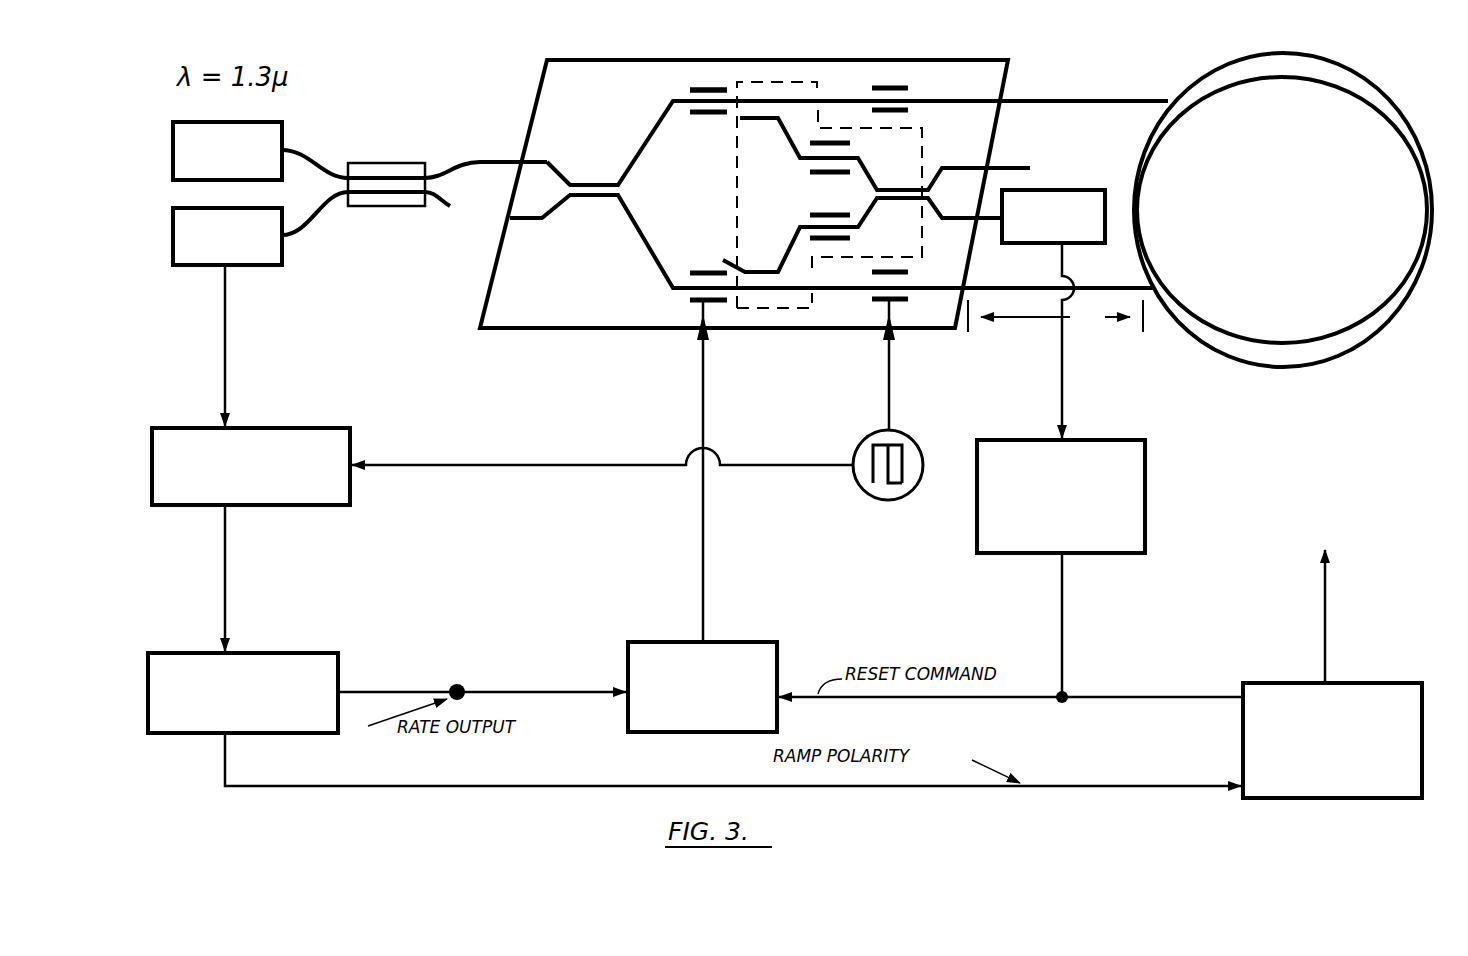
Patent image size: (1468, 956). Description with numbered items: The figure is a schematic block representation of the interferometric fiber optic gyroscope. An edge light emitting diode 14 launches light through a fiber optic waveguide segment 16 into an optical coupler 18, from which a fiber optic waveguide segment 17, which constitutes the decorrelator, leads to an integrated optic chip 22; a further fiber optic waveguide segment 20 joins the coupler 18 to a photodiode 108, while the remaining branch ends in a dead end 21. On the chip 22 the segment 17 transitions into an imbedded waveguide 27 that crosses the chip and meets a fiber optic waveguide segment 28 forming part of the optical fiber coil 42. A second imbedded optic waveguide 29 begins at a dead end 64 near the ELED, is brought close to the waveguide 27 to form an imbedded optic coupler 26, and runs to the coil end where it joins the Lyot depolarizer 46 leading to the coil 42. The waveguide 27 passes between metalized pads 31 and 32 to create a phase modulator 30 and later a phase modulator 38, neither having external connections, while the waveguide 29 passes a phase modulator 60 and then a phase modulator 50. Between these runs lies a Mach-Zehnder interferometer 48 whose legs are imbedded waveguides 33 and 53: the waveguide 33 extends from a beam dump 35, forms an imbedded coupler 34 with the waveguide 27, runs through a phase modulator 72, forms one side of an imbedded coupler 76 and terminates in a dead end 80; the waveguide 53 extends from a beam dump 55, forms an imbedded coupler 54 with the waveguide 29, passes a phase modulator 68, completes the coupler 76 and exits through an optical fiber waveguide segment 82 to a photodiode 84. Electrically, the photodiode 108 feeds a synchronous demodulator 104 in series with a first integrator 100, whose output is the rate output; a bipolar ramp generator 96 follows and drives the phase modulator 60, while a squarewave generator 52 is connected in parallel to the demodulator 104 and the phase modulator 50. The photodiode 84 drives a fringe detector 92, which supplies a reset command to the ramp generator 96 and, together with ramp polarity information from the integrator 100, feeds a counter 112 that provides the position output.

The edge light emitting diode 14 is at (285, 122).
The fiber optic waveguide segment 16 is at (315, 155).
The fiber optic waveguide segment 17 is at (470, 160).
The optical coupler 18 is at (400, 162).
The fiber optic waveguide segment 20 is at (313, 215).
The dead end 21 is at (448, 210).
The integrated optic chip 22 is at (537, 95).
The imbedded optic coupler 26 is at (588, 170).
The imbedded waveguide 27 is at (650, 150).
The fiber optic waveguide segment 28 is at (1082, 100).
The imbedded optic waveguide 29 is at (688, 300).
The phase modulator 30 is at (686, 90).
The metalized pad 31 is at (704, 85).
The metalized pad 32 is at (700, 118).
The imbedded waveguide 33 is at (785, 132).
The imbedded coupler 34 is at (766, 92).
The beam dump 35 is at (745, 122).
The phase modulator 38 is at (900, 82).
The optical fiber coil 42 is at (1302, 52).
The Lyot depolarizer 46 is at (1055, 316).
The Mach-Zehnder interferometer 48 is at (922, 125).
The phase modulator 50 is at (908, 270).
The squarewave generator 52 is at (908, 432).
The imbedded waveguide 53 is at (800, 225).
The imbedded coupler 54 is at (758, 262).
The beam dump 55 is at (723, 258).
The phase modulator 60 is at (686, 277).
The dead end 64 is at (520, 220).
The phase modulator 68 is at (818, 210).
The phase modulator 72 is at (856, 152).
The imbedded coupler 76 is at (896, 206).
The dead end 80 is at (1020, 167).
The optical fiber waveguide segment 82 is at (990, 220).
The photodiode 84 is at (1085, 190).
The fringe detector 92 is at (1122, 440).
The bipolar ramp generator 96 is at (742, 642).
The first integrator 100 is at (288, 653).
The synchronous demodulator 104 is at (298, 428).
The photodiode 108 is at (268, 267).
The counter 112 is at (1378, 683).